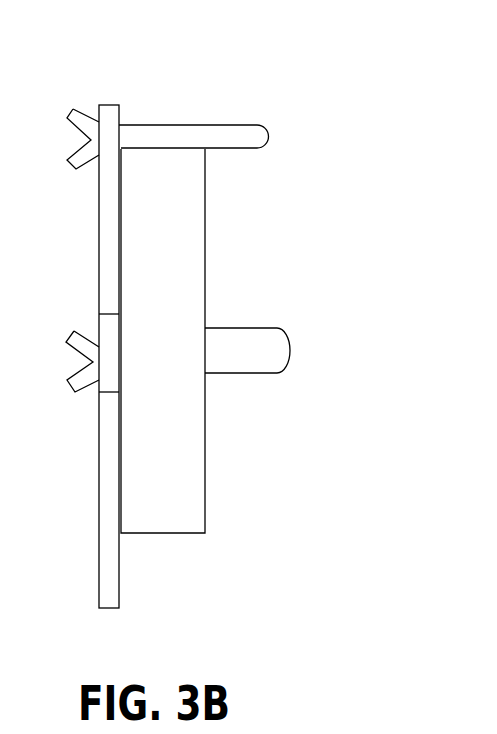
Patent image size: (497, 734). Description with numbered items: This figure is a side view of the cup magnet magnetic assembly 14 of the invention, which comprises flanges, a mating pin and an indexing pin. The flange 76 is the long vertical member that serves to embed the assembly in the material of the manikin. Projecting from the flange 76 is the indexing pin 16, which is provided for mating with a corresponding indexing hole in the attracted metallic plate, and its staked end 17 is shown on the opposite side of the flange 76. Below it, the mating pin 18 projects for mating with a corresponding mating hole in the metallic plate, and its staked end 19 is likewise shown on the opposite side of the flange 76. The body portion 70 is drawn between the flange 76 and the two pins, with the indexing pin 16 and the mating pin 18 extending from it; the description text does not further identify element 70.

The magnetic assembly 14 is at (186, 74).
The indexing pin 16 is at (230, 143).
The staked end of the indexing pin 17 is at (80, 130).
The mating pin 18 is at (262, 352).
The staked end of the mating pin 19 is at (83, 345).
The plate 70 is at (182, 212).
The flange 76 is at (107, 521).